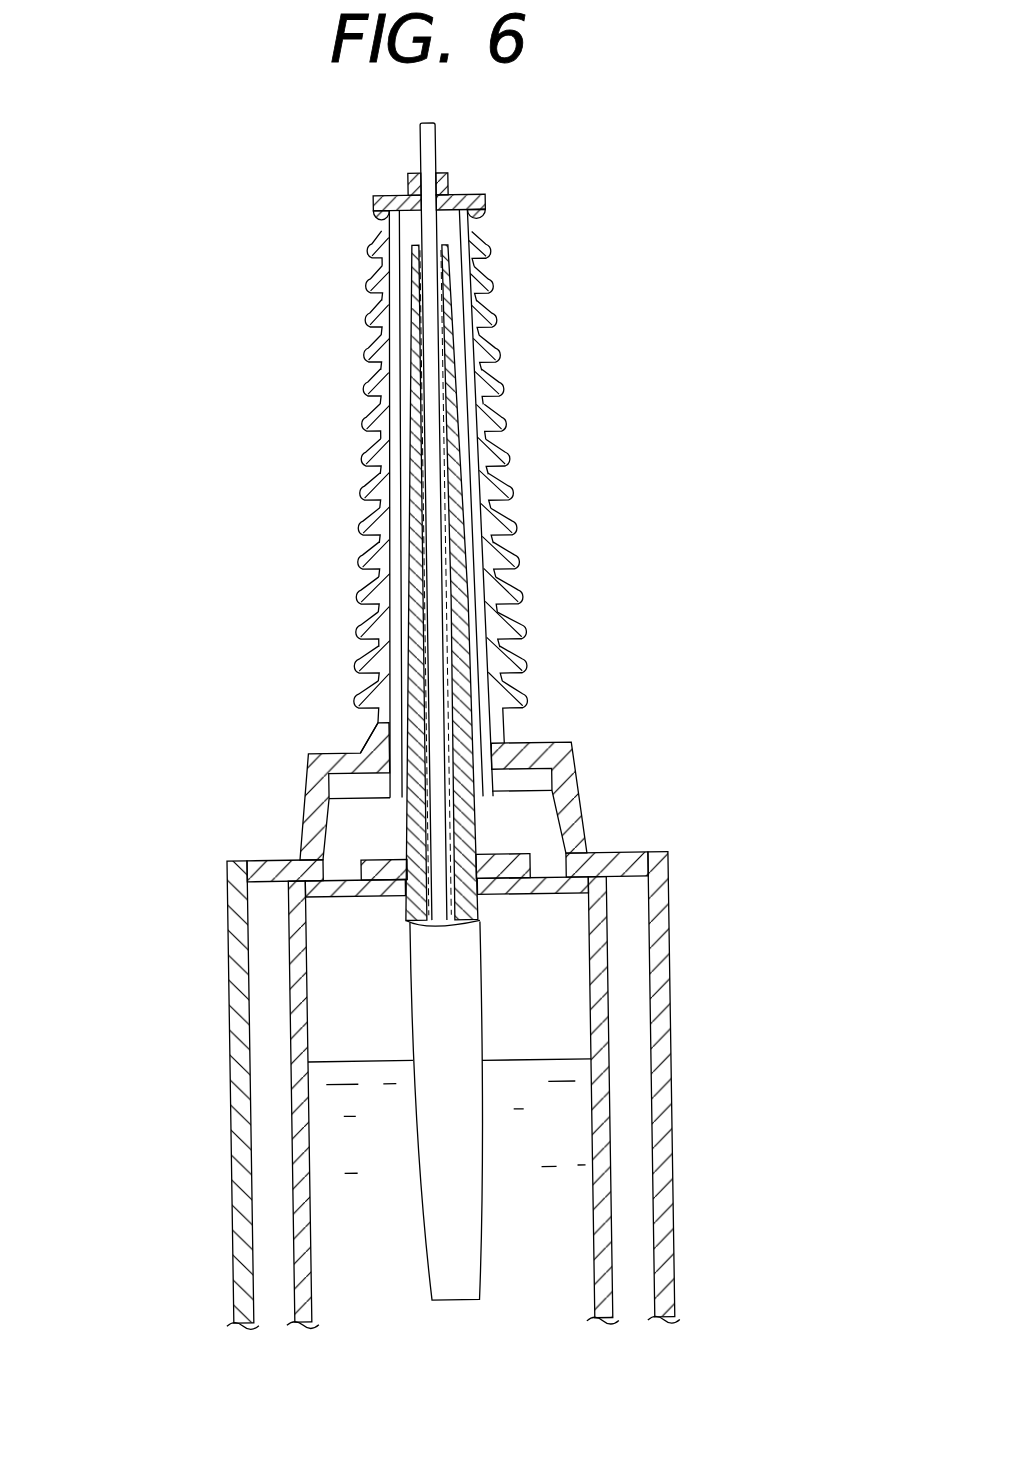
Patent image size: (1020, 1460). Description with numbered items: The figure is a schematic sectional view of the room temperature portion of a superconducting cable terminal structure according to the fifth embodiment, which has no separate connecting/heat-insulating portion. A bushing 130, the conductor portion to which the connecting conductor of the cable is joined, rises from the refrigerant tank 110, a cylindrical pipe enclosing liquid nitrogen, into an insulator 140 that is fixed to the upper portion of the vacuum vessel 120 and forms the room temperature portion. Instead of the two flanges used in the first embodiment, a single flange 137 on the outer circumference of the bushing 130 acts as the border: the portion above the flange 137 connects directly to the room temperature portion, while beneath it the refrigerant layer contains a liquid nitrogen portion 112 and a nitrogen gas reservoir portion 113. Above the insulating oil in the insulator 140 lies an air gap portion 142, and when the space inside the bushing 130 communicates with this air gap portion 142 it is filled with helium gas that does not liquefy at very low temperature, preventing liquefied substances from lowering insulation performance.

The air gap portion 142 is at (456, 224).
The insulator 140 is at (520, 424).
The bushing 130 is at (421, 740).
The flange 137 is at (500, 868).
The vacuum vessel 120 is at (231, 937).
The refrigerant tank 110 is at (288, 1036).
The nitrogen gas reservoir portion 113 is at (553, 1010).
The liquid nitrogen portion 112 is at (566, 1147).